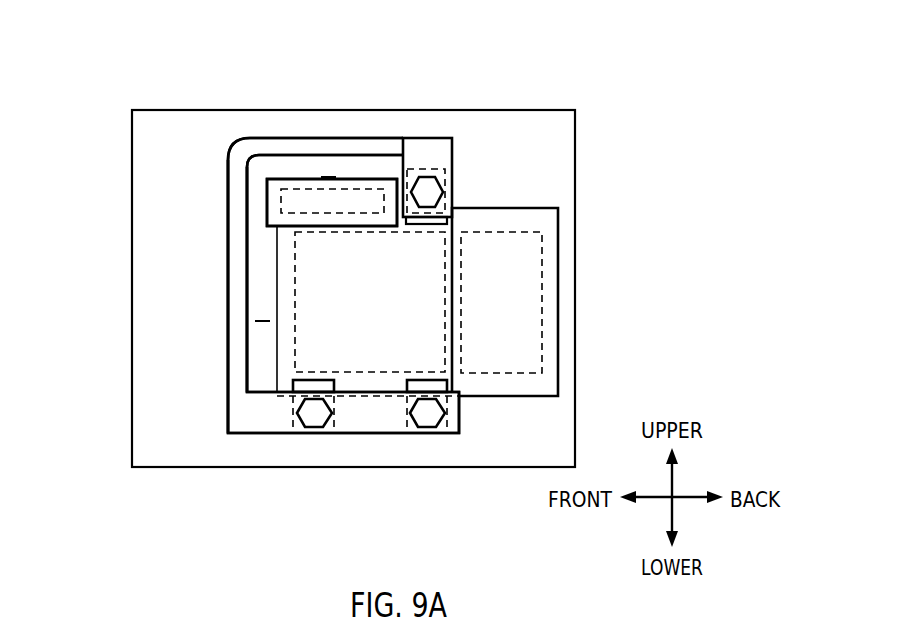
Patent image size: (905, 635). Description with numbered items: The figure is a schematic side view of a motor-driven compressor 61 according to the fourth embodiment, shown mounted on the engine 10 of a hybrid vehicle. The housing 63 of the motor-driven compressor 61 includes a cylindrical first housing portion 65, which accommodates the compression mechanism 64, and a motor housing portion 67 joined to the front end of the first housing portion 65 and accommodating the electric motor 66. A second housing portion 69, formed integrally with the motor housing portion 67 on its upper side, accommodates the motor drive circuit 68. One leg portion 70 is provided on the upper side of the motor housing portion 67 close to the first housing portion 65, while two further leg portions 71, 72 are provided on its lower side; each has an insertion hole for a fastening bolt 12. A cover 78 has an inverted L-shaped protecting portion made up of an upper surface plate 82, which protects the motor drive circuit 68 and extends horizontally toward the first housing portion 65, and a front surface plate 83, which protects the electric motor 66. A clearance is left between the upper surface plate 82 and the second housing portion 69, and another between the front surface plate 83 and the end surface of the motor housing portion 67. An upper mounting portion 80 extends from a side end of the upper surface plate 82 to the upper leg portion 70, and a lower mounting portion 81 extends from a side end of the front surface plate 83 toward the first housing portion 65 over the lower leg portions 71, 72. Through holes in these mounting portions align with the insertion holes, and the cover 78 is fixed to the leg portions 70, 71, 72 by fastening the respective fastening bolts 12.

The engine 10 is at (168, 108).
The motor-driven compressor 61 is at (620, 106).
The housing 63 is at (208, 50).
The motor housing portion 67 is at (277, 253).
The second housing portion 69 is at (342, 179).
The first housing portion 65 is at (522, 208).
The upper surface plate 82 is at (285, 148).
The motor drive circuit 68 is at (333, 215).
The upper mounting portion 80 is at (412, 151).
The leg portion 70 is at (423, 178).
The fastening bolt 12 is at (442, 184).
The compression mechanism 64 is at (555, 325).
The electric motor 66 is at (297, 330).
The cover 78 is at (224, 302).
The front surface plate 83 is at (240, 366).
The lower mounting portion 81 is at (374, 425).
The leg portion 71 is at (293, 420).
The leg portion 72 is at (459, 410).